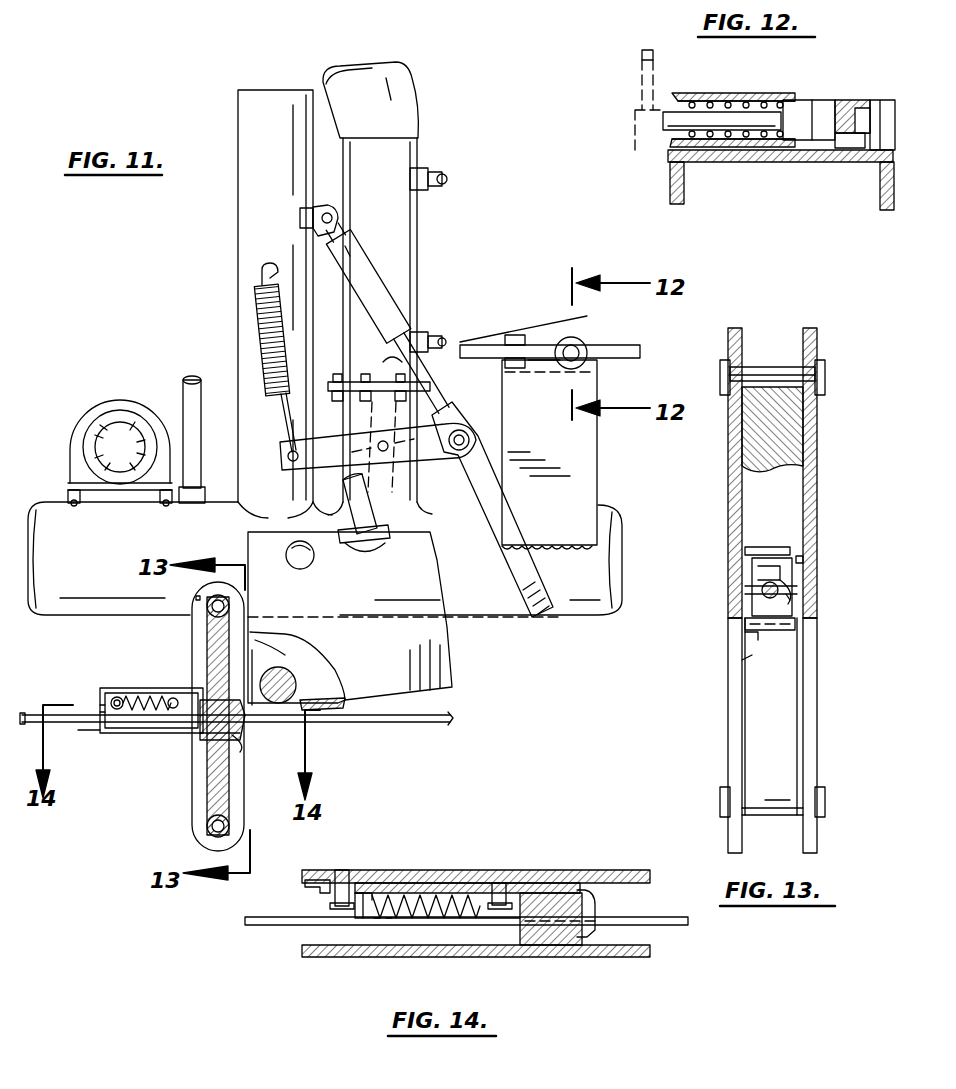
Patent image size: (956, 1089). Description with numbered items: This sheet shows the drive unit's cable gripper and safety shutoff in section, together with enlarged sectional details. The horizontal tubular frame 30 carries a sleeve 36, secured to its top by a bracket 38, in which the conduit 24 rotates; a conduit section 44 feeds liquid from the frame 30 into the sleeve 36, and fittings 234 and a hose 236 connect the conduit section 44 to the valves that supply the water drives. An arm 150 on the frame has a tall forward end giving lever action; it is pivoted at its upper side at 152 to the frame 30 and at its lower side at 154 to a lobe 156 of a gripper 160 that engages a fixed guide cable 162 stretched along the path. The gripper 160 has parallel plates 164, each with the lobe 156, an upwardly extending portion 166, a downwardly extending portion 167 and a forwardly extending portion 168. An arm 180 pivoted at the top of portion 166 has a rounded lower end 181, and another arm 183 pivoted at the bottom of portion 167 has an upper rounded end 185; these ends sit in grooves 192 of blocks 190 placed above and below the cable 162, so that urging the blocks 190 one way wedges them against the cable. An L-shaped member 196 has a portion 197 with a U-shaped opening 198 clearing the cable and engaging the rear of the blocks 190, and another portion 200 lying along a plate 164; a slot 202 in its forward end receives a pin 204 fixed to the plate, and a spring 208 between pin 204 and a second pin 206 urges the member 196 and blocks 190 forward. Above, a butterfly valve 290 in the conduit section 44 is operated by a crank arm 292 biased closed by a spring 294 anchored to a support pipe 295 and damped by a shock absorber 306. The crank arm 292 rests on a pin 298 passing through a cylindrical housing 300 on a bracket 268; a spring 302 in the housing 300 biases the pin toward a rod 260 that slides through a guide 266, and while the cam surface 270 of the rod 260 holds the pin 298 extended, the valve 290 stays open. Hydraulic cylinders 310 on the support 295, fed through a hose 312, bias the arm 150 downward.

In FIG. 11, the conduit 24 is at (128, 420).
In FIG. 11, the tubular frame 30 is at (606, 544).
In FIG. 11, the sleeve 36 is at (96, 408).
In FIG. 11, the bracket 38 is at (68, 497).
In FIG. 11, the conduit section 44 is at (420, 106).
In FIG. 11, the arm 150 is at (447, 628).
In FIG. 11, the pivot 152 is at (286, 548).
In FIG. 11, the pivot 154 is at (300, 676).
In FIG. 11, the lobe 156 is at (284, 668).
In FIG. 11, the gripper 160 is at (239, 713).
In FIG. 11, the guide cable 162 is at (445, 726).
In FIG. 13, the guide cable 162 is at (750, 598).
In FIG. 14, the guide cable 162 is at (260, 926).
In FIG. 13, the parallel plates 164 is at (730, 732).
In FIG. 14, the parallel plates 164 is at (626, 958).
In FIG. 11, the upwardly extending portion 166 is at (192, 630).
In FIG. 13, the upwardly extending portion 166 is at (808, 332).
In FIG. 11, the downwardly extending portion 167 is at (192, 782).
In FIG. 13, the downwardly extending portion 167 is at (810, 838).
In FIG. 11, the forwardly extending portion 168 is at (100, 730).
In FIG. 14, the forwardly extending portion 168 is at (306, 888).
In FIG. 11, the arm 180 is at (230, 605).
In FIG. 13, the arm 180 is at (796, 442).
In FIG. 11, the rounded lower end 181 is at (215, 690).
In FIG. 13, the rounded lower end 181 is at (806, 558).
In FIG. 11, the arm 183 is at (224, 792).
In FIG. 13, the arm 183 is at (796, 716).
In FIG. 11, the upper rounded end 185 is at (206, 732).
In FIG. 13, the upper rounded end 185 is at (800, 628).
In FIG. 11, the blocks 190 is at (206, 716).
In FIG. 13, the blocks 190 is at (770, 640).
In FIG. 14, the blocks 190 is at (552, 945).
In FIG. 11, the grooves 192 is at (243, 738).
In FIG. 13, the grooves 192 is at (748, 660).
In FIG. 11, the L-shaped member 196 is at (118, 736).
In FIG. 14, the L-shaped member 196 is at (552, 880).
In FIG. 13, the portion 197 is at (752, 578).
In FIG. 14, the portion 197 is at (600, 910).
In FIG. 13, the U-shaped opening 198 is at (752, 636).
In FIG. 11, the portion 200 is at (132, 736).
In FIG. 14, the portion 200 is at (410, 883).
In FIG. 11, the slot 202 is at (102, 708).
In FIG. 14, the slot 202 is at (358, 884).
In FIG. 11, the pin 204 is at (110, 700).
In FIG. 14, the pin 204 is at (340, 868).
In FIG. 11, the pin 206 is at (176, 698).
In FIG. 14, the pin 206 is at (500, 886).
In FIG. 11, the spring 208 is at (140, 690).
In FIG. 14, the spring 208 is at (458, 896).
In FIG. 11, the fittings 234 is at (432, 174).
In FIG. 11, the hose 236 is at (432, 332).
In FIG. 11, the rod 260 is at (634, 352).
In FIG. 12, the rod 260 is at (876, 116).
In FIG. 11, the guide 266 is at (514, 335).
In FIG. 12, the guide 266 is at (844, 102).
In FIG. 11, the bracket 268 is at (597, 470).
In FIG. 12, the bracket 268 is at (682, 184).
In FIG. 12, the cam surface 270 is at (812, 145).
In FIG. 11, the butterfly valve 290 is at (416, 458).
In FIG. 11, the crank arm 292 is at (484, 425).
In FIG. 12, the crank arm 292 is at (640, 62).
In FIG. 11, the spring 294 is at (262, 326).
In FIG. 11, the support pipe 295 is at (238, 190).
In FIG. 11, the pin 298 is at (594, 362).
In FIG. 12, the pin 298 is at (668, 126).
In FIG. 11, the cylindrical housing 300 is at (588, 320).
In FIG. 12, the cylindrical housing 300 is at (712, 94).
In FIG. 12, the spring 302 is at (755, 96).
In FIG. 11, the shock absorber 306 is at (372, 294).
In FIG. 11, the hydraulic cylinders 310 is at (356, 500).
In FIG. 11, the hose 312 is at (192, 380).